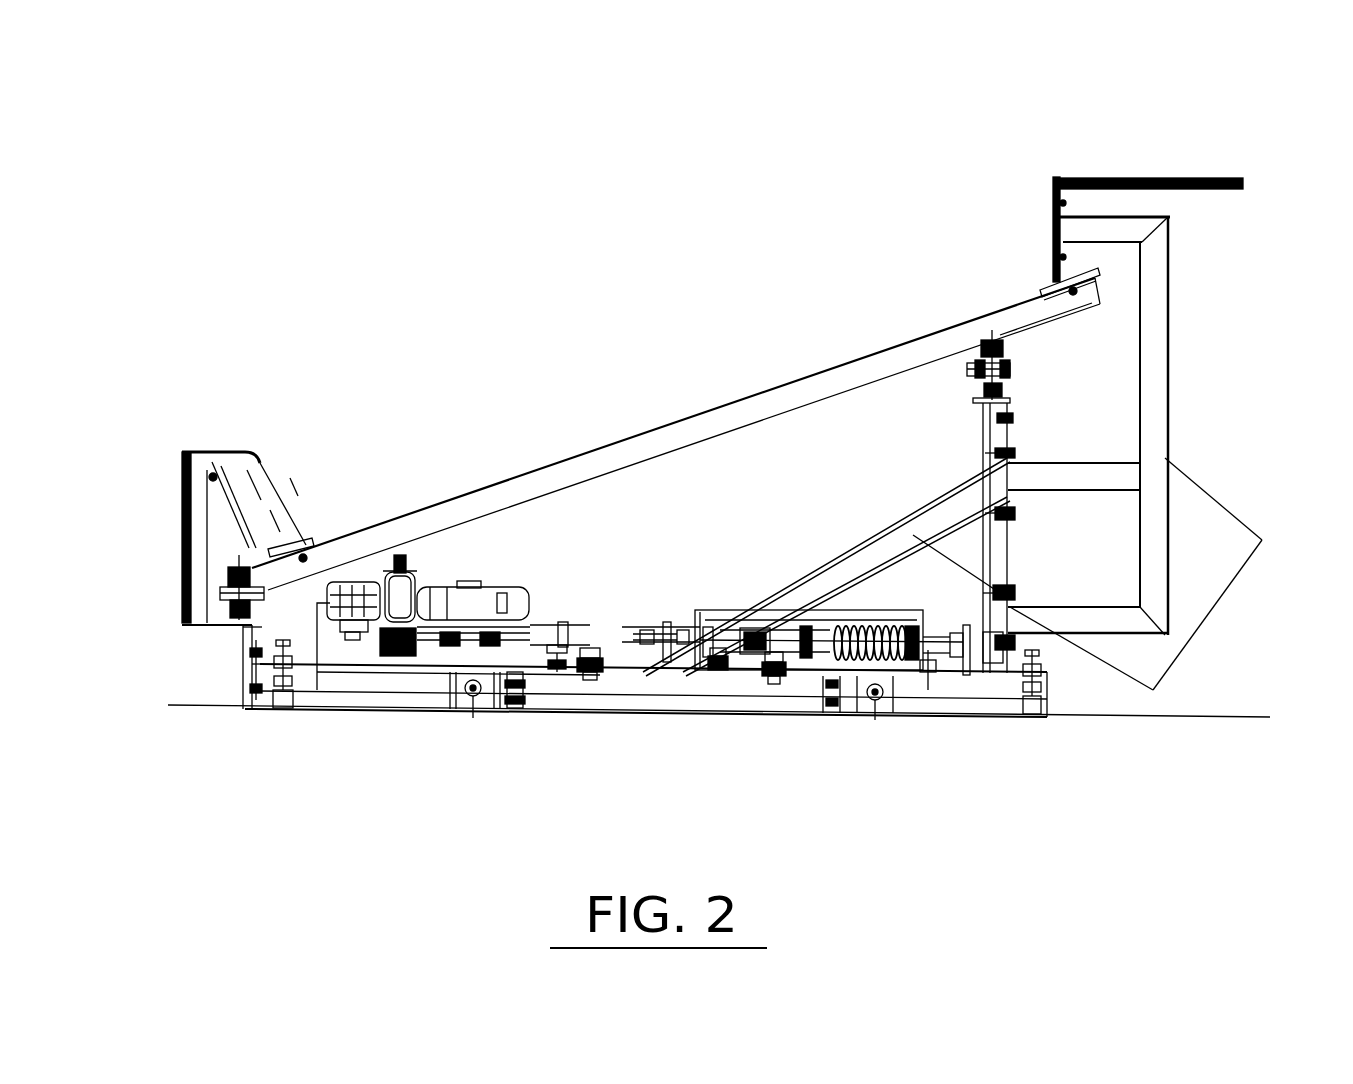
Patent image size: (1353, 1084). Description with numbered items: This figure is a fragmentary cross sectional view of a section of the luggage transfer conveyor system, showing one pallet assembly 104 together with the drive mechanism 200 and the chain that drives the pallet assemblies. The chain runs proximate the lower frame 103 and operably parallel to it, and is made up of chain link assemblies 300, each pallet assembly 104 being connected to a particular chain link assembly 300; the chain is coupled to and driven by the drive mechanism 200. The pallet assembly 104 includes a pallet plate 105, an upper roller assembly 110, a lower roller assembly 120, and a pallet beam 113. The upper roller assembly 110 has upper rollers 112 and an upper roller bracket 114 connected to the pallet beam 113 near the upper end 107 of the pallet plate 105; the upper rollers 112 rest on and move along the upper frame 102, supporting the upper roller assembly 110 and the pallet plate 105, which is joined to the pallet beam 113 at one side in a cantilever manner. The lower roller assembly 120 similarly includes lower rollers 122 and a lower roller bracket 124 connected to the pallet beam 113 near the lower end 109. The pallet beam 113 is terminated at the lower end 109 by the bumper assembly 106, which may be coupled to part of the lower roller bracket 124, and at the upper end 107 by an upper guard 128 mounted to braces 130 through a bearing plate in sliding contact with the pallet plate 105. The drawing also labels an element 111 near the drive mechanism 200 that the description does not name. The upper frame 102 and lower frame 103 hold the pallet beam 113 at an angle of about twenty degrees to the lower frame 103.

The upper frame 102 is at (1007, 400).
The lower frame 103 is at (248, 628).
The pallet assembly 104 is at (588, 380).
The pallet plate 105 is at (668, 428).
The bumper assembly 106 is at (267, 450).
The upper end 107 is at (1108, 290).
The lower end 109 is at (237, 552).
The upper roller assembly 110 is at (1040, 336).
The drive coupler 111 is at (402, 553).
The upper rollers 112 is at (1002, 388).
The pallet beam 113 is at (718, 437).
The upper roller bracket 114 is at (980, 357).
The lower roller assembly 120 is at (222, 629).
The lower rollers 122 is at (230, 618).
The lower roller bracket 124 is at (265, 550).
The upper guard 128 is at (1058, 180).
The braces 130 is at (1067, 610).
The drive mechanism 200 is at (547, 743).
The chain link assembly 300 is at (418, 582).